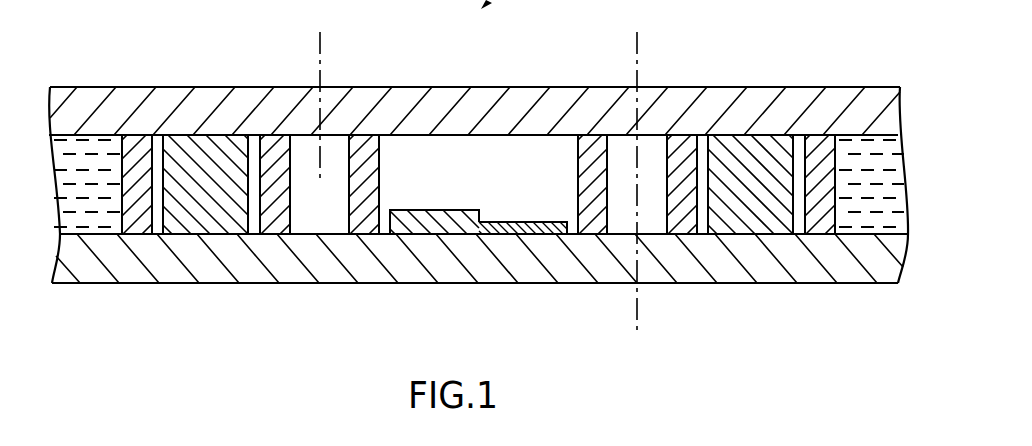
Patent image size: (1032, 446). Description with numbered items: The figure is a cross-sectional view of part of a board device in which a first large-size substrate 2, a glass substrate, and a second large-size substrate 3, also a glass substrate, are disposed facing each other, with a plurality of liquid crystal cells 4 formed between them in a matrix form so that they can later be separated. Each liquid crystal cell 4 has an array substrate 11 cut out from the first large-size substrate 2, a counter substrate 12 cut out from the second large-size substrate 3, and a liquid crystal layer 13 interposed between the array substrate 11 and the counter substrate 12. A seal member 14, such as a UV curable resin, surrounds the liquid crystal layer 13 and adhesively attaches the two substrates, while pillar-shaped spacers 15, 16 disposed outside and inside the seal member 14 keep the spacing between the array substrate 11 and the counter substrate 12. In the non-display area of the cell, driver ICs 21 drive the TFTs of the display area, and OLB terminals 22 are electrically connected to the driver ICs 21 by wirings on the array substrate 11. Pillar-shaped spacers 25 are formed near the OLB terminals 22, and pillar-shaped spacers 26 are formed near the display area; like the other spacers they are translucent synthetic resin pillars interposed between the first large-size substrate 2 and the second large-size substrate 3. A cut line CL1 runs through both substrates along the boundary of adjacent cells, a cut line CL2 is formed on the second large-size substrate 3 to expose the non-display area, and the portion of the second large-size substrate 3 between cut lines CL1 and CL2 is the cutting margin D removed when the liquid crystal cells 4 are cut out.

The first large-size substrate 2 is at (325, 287).
The second large-size substrate 3 is at (195, 85).
The liquid crystal cell 4 is at (708, 85).
The array substrate 11 is at (112, 270).
The counter substrate 12 is at (117, 103).
The liquid crystal layer 13 is at (80, 153).
The seal member 14 is at (195, 217).
The pillar-shaped spacer 15 is at (275, 217).
The pillar-shaped spacer 16 is at (138, 217).
The driver IC 21 is at (443, 226).
The OLB terminal 22 is at (517, 226).
The pillar-shaped spacer 25 is at (593, 152).
The pillar-shaped spacer 26 is at (367, 145).
The cutting margin D is at (473, 103).
The cut line CL1 is at (638, 56).
The cut line CL2 is at (321, 56).